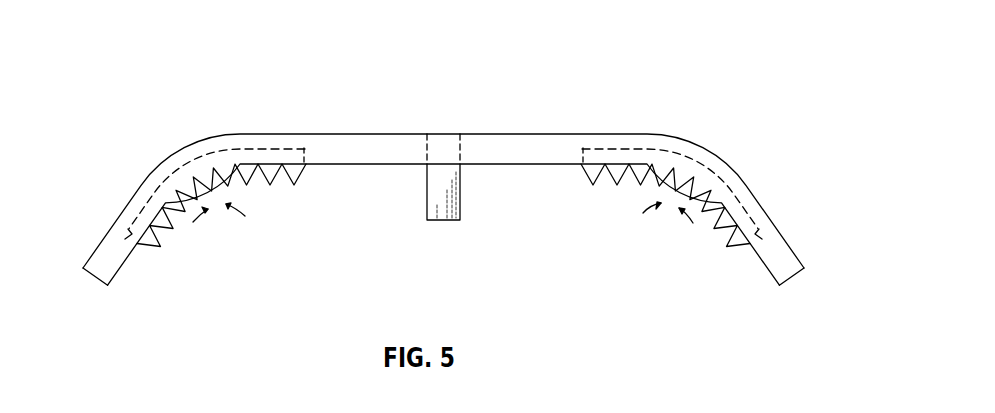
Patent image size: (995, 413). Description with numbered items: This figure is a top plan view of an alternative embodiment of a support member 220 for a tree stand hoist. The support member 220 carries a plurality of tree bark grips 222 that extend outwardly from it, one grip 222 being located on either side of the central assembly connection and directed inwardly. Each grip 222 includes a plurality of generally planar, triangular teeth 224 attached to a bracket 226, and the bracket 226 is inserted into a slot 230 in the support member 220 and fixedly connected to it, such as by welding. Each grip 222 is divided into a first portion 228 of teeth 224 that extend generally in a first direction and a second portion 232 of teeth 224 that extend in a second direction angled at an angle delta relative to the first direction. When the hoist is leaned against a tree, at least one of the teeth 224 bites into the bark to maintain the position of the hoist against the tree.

The support member 220 is at (166, 160).
The tree bark grip 222 is at (148, 247).
The teeth 224 is at (172, 228).
The bracket 226 is at (118, 217).
The first portion 228 is at (306, 166).
The slot 230 is at (262, 167).
The second portion 232 is at (150, 197).